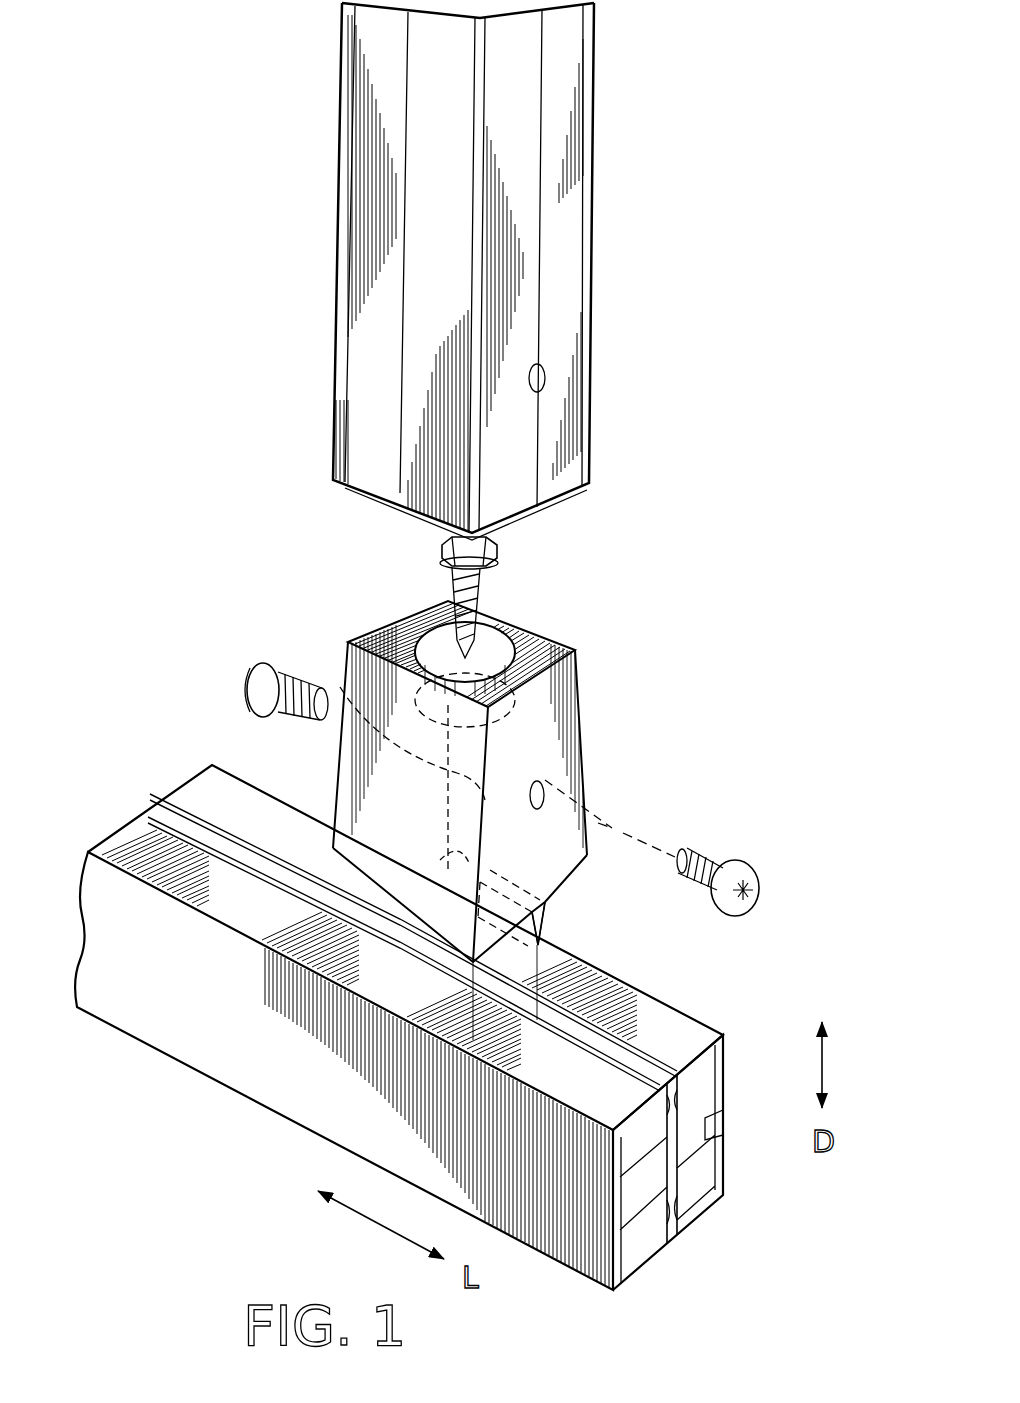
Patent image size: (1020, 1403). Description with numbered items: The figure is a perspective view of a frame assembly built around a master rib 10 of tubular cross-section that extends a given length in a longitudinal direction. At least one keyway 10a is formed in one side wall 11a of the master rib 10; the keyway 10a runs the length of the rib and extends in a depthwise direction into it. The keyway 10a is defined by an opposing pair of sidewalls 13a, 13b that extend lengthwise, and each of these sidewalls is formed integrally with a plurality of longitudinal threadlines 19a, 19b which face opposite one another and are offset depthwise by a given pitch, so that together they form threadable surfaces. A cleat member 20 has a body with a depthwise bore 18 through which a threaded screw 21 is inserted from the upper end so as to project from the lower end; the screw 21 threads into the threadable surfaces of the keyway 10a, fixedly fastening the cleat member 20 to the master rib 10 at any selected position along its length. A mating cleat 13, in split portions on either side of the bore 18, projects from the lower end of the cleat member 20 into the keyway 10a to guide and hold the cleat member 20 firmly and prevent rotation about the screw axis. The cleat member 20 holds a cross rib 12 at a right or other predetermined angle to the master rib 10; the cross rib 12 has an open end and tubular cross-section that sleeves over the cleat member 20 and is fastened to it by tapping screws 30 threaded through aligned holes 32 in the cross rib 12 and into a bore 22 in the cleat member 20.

The master rib 10 is at (250, 1140).
The keyway 10a is at (180, 818).
The side wall 11a is at (248, 802).
The cross rib 12 is at (615, 216).
The mating cleat 13 is at (550, 920).
The sidewall 13a is at (660, 1097).
The sidewall 13b is at (722, 1045).
The depthwise bore 18 is at (335, 672).
The threadlines 19a is at (673, 1123).
The threadlines 19b is at (673, 1090).
The cleat member 20 is at (575, 727).
The threaded screw 21 is at (505, 580).
The bore 22 is at (545, 793).
The tapping screws 30 is at (272, 662).
The holes 32 is at (540, 377).